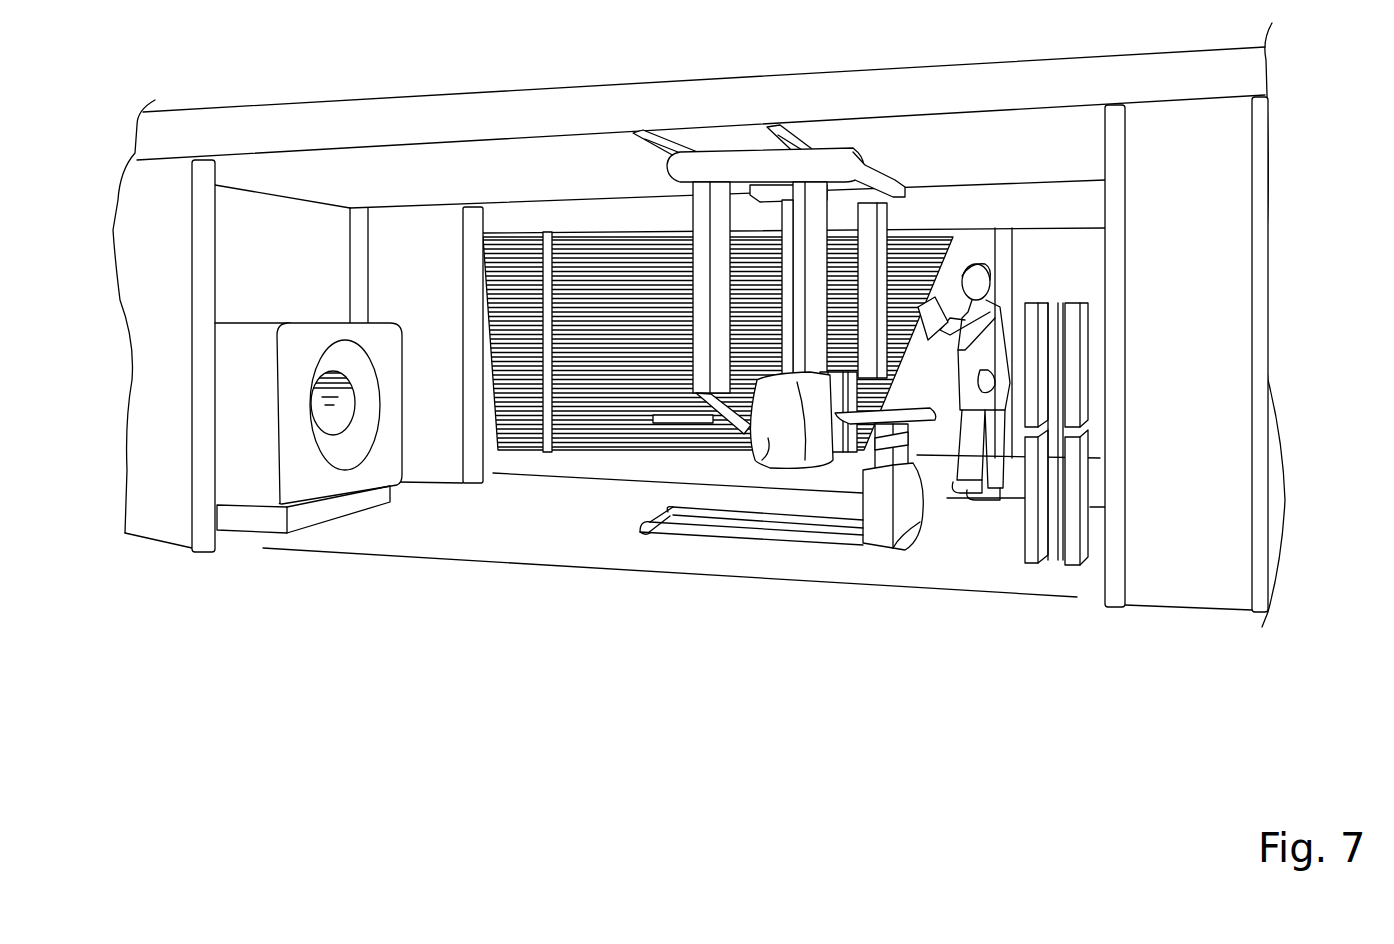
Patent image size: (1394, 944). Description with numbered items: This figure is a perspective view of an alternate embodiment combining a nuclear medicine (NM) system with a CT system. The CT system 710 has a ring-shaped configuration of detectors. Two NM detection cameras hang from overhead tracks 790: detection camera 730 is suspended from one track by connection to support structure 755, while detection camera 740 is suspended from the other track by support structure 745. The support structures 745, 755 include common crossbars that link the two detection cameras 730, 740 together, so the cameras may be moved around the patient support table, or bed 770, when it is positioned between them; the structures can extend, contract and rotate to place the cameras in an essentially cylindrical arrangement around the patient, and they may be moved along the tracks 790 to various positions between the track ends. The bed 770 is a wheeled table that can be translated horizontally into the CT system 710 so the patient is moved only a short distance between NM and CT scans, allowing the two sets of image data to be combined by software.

The CT system 710 is at (307, 515).
The detection camera 730 is at (873, 400).
The detection camera 740 is at (763, 458).
The support structure 745 is at (705, 220).
The support structure 755 is at (890, 227).
The patient support table (bed) 770 is at (903, 488).
The tracks 790 is at (805, 100).